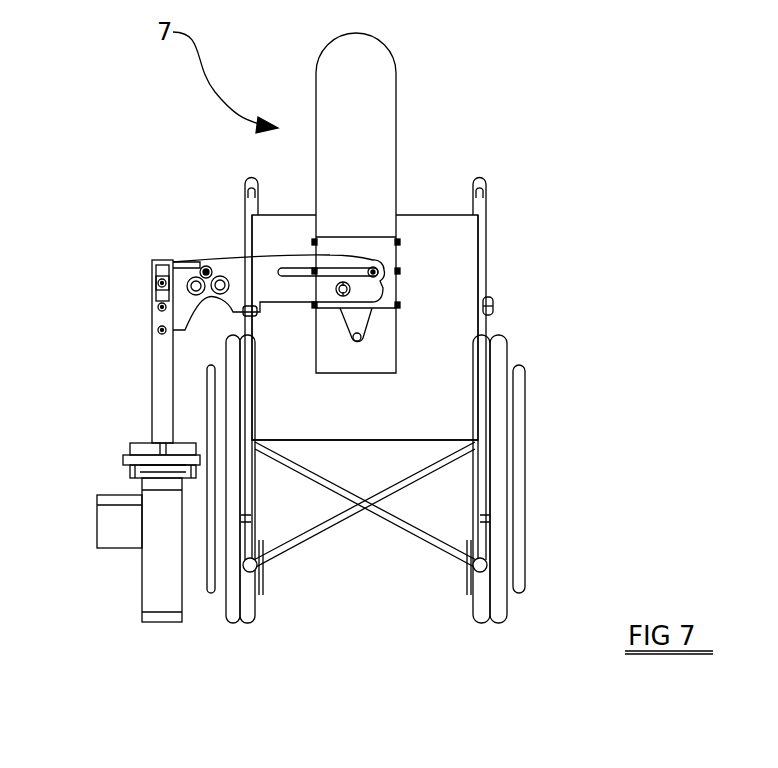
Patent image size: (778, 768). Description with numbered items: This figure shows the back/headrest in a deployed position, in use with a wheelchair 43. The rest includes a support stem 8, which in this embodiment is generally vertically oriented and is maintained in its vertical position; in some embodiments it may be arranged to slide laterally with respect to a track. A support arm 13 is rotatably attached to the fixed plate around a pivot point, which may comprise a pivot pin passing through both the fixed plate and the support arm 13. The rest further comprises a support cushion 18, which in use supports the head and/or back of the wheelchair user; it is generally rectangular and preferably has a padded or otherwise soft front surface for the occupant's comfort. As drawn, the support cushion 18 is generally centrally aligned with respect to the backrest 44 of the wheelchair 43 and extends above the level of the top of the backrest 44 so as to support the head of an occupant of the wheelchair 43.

The support stem 8 is at (165, 359).
The support arm 13 is at (247, 272).
The support cushion 18 is at (397, 148).
The wheelchair 43 is at (526, 400).
The backrest 44 is at (478, 270).